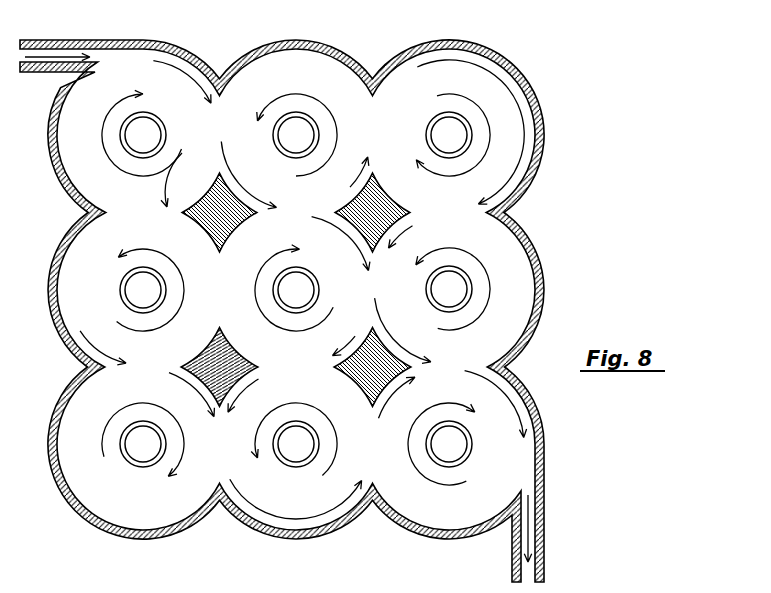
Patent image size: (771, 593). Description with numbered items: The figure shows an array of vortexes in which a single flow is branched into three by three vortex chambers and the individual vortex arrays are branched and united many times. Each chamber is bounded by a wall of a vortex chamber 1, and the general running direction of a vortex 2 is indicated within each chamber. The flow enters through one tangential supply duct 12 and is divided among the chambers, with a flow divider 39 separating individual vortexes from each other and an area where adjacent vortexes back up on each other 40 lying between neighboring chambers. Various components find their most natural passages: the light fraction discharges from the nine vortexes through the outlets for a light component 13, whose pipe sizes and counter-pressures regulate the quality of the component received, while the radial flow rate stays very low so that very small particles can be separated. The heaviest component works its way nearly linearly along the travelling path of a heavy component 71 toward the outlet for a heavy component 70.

The wall of a vortex chamber 1 is at (535, 310).
The general running direction of a vortex 2 is at (184, 289).
The tangential supply duct 12 is at (62, 47).
The outlet for a light component 13 is at (153, 127).
The flow divider 39 is at (360, 380).
The area where adjacent vortexes back up on each other 40 is at (221, 131).
The outlet for a heavy component 70 is at (519, 563).
The travelling path of a heavy component in principle 71 is at (236, 173).